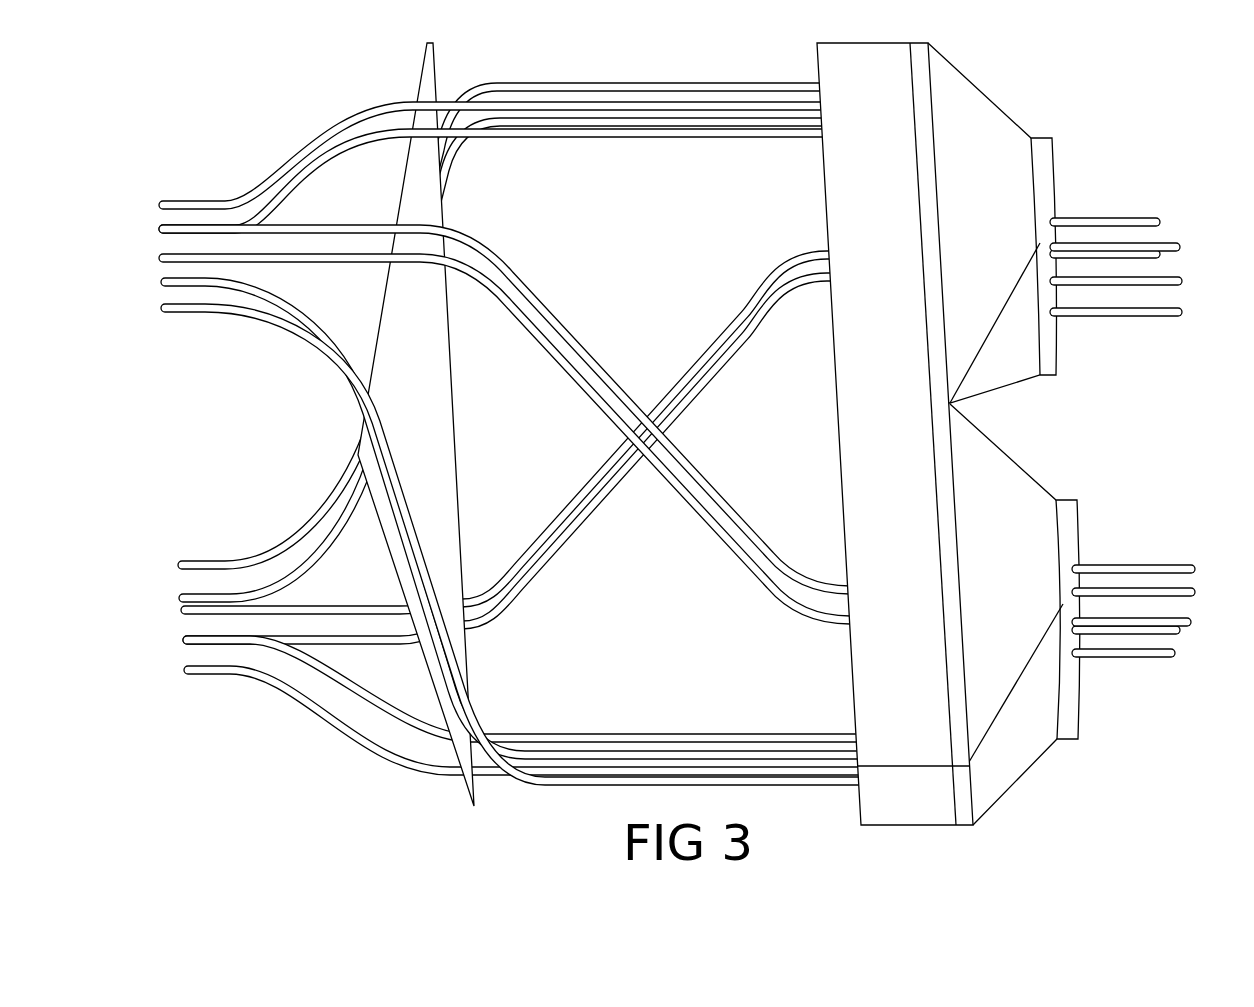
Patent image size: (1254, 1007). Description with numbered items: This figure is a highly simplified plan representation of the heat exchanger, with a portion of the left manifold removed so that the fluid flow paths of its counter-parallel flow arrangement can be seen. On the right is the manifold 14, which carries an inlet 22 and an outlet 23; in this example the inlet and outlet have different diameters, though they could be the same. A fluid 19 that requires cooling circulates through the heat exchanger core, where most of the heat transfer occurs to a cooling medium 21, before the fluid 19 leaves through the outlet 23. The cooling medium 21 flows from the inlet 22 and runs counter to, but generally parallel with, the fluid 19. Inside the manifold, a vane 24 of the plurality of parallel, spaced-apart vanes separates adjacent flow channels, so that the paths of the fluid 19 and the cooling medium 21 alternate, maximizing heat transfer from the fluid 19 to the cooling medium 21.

The manifold 14 is at (899, 417).
The fluid 19 is at (205, 201).
The cooling medium 21 is at (1147, 316).
The inlet 22 is at (1048, 188).
The outlet 23 is at (1073, 532).
The vane 24 is at (430, 424).